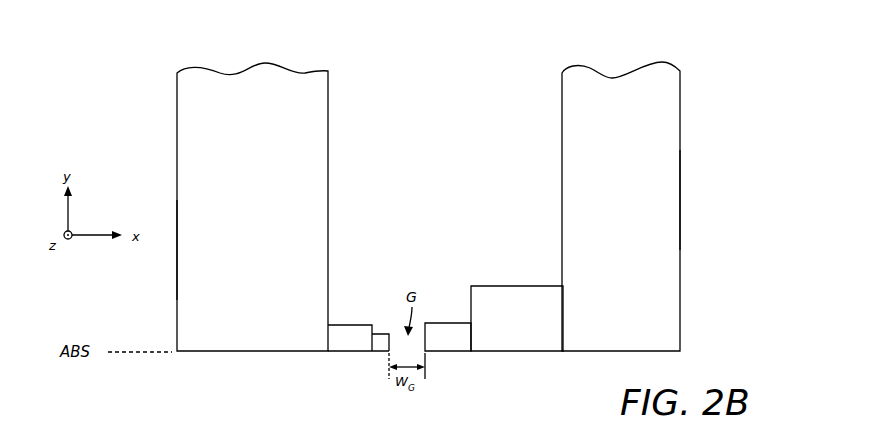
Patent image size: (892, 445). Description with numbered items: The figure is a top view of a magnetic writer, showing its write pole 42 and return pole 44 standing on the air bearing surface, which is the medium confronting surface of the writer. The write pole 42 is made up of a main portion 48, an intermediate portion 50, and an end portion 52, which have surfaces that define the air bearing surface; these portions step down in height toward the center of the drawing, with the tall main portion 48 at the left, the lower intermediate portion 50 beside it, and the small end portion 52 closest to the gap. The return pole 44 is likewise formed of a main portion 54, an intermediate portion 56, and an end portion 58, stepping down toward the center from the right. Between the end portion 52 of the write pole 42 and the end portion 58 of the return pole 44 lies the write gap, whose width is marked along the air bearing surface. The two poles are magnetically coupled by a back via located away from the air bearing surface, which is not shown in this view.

The write pole 42 is at (166, 89).
The return pole 44 is at (552, 86).
The main portion 48 is at (175, 249).
The intermediate portion 50 is at (350, 325).
The end portion 52 is at (381, 333).
The main portion 54 is at (671, 197).
The intermediate portion 56 is at (508, 292).
The end portion 58 is at (441, 328).